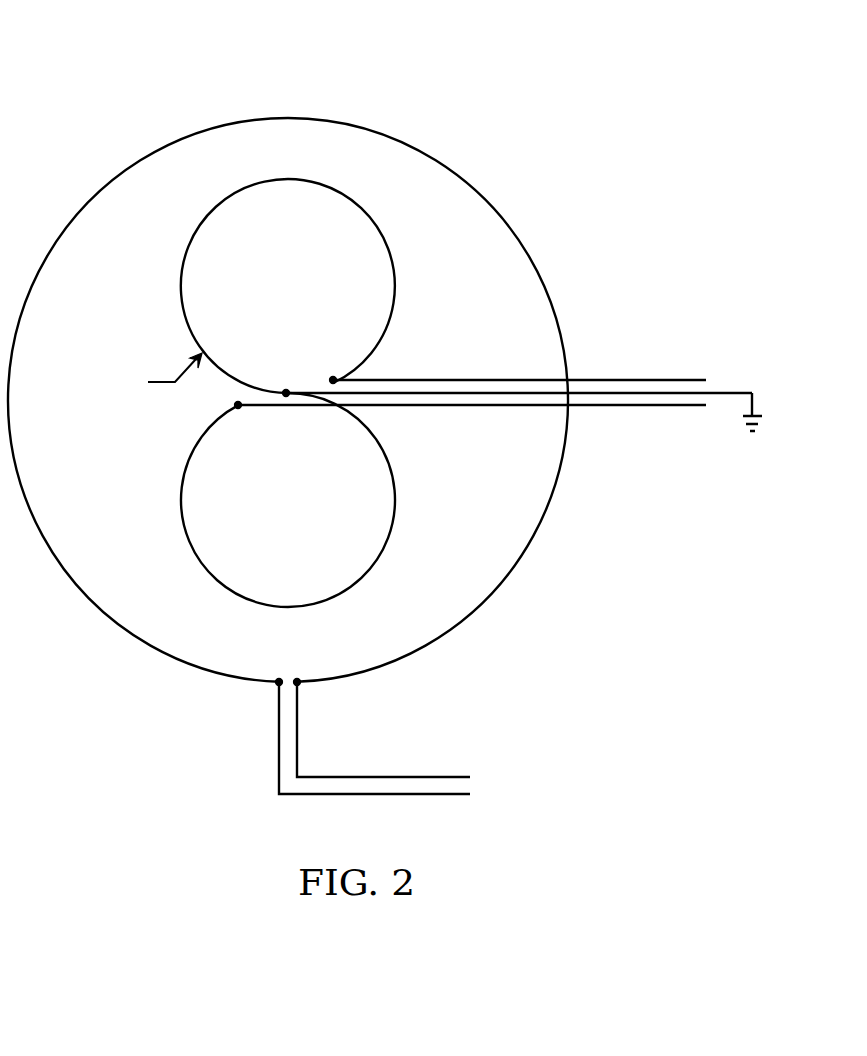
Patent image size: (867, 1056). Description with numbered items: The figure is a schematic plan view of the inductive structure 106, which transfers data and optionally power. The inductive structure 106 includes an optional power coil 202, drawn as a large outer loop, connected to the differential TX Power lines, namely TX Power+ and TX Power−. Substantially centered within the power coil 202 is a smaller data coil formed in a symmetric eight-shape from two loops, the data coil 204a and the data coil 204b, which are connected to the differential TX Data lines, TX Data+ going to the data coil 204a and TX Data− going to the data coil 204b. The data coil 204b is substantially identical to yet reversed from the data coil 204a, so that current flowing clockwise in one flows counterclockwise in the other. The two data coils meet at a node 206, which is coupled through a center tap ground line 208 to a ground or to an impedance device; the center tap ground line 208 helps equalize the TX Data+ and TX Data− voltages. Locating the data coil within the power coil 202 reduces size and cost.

The inductive structure 106 is at (528, 138).
The power coil 202 is at (135, 158).
The data coil 204a is at (178, 287).
The data coil 204b is at (178, 503).
The node 206 is at (286, 393).
The center tap ground line 208 is at (730, 392).